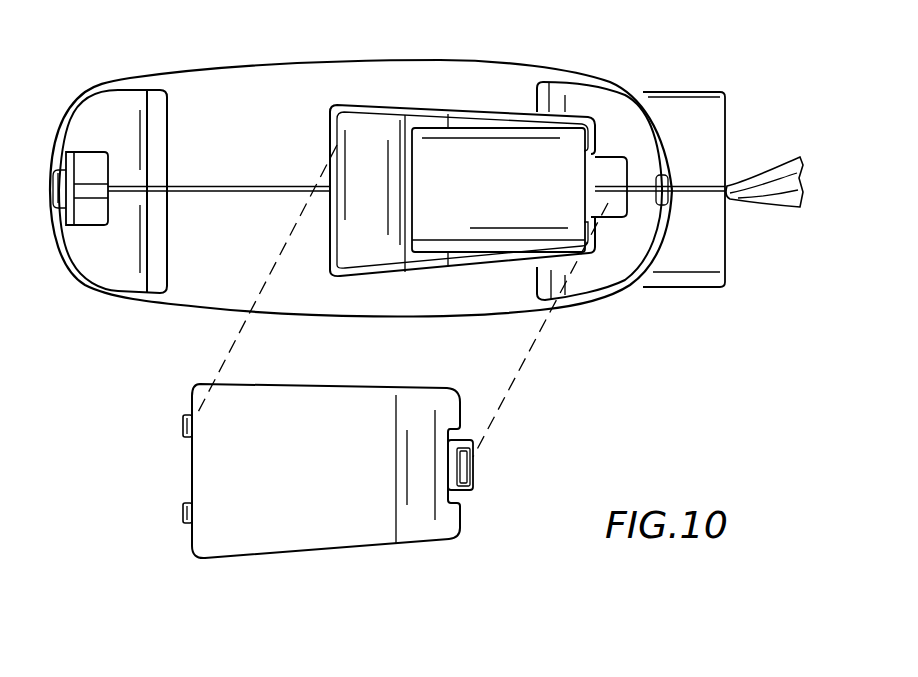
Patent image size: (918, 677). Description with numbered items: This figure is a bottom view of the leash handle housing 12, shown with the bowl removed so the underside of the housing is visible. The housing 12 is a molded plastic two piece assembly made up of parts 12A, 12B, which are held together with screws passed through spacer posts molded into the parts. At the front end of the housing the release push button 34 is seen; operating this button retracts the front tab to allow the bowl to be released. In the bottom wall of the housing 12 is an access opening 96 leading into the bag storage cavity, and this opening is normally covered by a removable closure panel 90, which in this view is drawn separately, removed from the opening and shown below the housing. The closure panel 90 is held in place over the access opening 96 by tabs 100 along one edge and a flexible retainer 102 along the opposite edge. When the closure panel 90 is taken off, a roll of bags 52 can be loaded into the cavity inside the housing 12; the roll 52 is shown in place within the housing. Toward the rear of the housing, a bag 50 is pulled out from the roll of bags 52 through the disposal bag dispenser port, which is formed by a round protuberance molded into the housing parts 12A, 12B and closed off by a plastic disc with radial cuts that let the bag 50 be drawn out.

The housing 12 is at (133, 73).
The housing part 12A is at (200, 297).
The housing part 12B is at (260, 77).
The release push button 34 is at (62, 220).
The bag 50 is at (762, 178).
The roll of bags 52 is at (512, 196).
The battery door 90 is at (326, 392).
The access opening 96 is at (350, 123).
The tabs 100 is at (183, 418).
The flexible retainer 102 is at (473, 488).